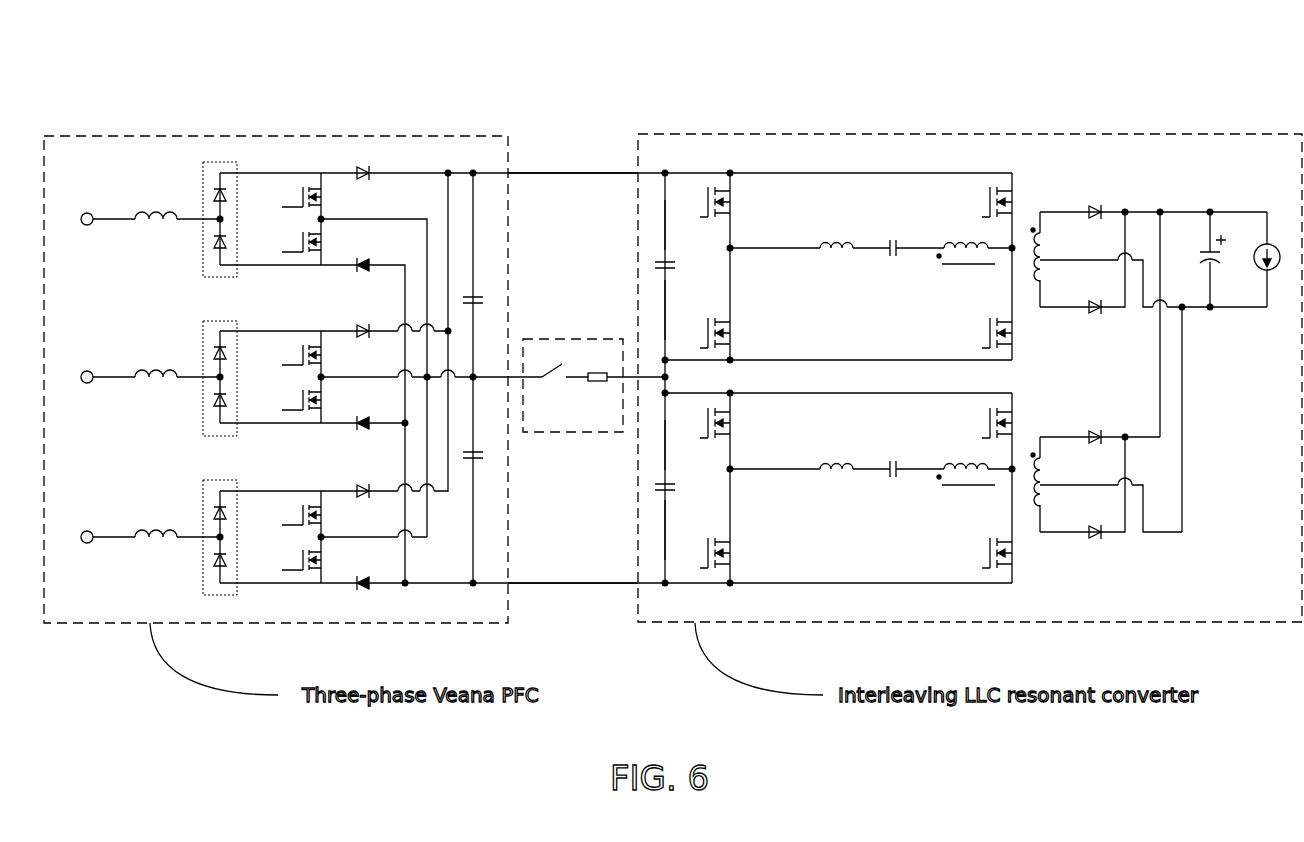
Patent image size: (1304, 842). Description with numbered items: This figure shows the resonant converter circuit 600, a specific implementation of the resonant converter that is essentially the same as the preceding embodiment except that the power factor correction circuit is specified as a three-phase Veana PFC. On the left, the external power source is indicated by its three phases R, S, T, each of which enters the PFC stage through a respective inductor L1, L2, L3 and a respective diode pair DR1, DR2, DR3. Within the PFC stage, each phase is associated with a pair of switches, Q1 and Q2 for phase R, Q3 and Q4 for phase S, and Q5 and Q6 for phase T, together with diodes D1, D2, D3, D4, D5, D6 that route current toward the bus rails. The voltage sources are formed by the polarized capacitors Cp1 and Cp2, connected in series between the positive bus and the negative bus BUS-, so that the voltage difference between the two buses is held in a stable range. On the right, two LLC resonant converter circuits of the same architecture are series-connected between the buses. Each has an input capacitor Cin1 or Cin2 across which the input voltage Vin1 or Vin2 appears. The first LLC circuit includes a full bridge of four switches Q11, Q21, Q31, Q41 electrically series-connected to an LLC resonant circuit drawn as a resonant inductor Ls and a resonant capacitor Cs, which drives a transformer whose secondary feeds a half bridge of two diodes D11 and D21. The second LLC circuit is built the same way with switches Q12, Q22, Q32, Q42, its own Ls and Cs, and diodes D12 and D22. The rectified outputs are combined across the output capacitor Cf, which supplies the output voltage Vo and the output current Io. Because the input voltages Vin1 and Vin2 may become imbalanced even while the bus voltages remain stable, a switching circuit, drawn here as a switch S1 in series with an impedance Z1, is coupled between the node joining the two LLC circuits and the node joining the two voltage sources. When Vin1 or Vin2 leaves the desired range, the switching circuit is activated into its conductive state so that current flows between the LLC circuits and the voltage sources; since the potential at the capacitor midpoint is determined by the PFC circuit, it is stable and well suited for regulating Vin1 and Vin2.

The resonant converter circuit 600 is at (680, 58).
The external power source phase R is at (95, 219).
The external power source phase S is at (95, 377).
The external power source phase T is at (94, 537).
The boost inductor L1 is at (177, 202).
The boost inductor L2 is at (177, 360).
The boost inductor L3 is at (177, 520).
The diode rectifier DR1 is at (193, 212).
The diode rectifier DR2 is at (193, 367).
The diode rectifier DR3 is at (193, 526).
The switch Q1 is at (292, 197).
The switch Q2 is at (292, 243).
The switch Q3 is at (292, 355).
The switch Q4 is at (292, 401).
The switch Q5 is at (292, 515).
The switch Q6 is at (292, 561).
The diode D1 is at (362, 188).
The diode D2 is at (362, 252).
The diode D3 is at (362, 346).
The diode D4 is at (362, 411).
The diode D5 is at (362, 506).
The diode D6 is at (362, 571).
The polarized capacitor Cp1 is at (497, 302).
The polarized capacitor Cp2 is at (497, 457).
The negative bus BUS- is at (573, 571).
The switch S1 is at (536, 392).
The impedance Z1 is at (615, 396).
The input capacitor Cin1 is at (640, 267).
The input capacitor Cin2 is at (640, 488).
The input voltage Vin1 is at (690, 270).
The input voltage Vin2 is at (690, 490).
The switch Q11 is at (738, 202).
The switch Q21 is at (738, 334).
The switch Q31 is at (983, 202).
The switch Q41 is at (983, 334).
The switch Q12 is at (738, 423).
The switch Q22 is at (738, 554).
The switch Q32 is at (983, 423).
The switch Q42 is at (983, 554).
The resonant inductor Ls is at (836, 340).
The resonant capacitor Cs is at (894, 343).
The diode D11 is at (1091, 227).
The diode D21 is at (1091, 294).
The diode D12 is at (1091, 452).
The diode D22 is at (1091, 519).
The output filter capacitor Cf is at (1216, 259).
The output voltage Vo is at (1255, 228).
The output current Io is at (1265, 275).